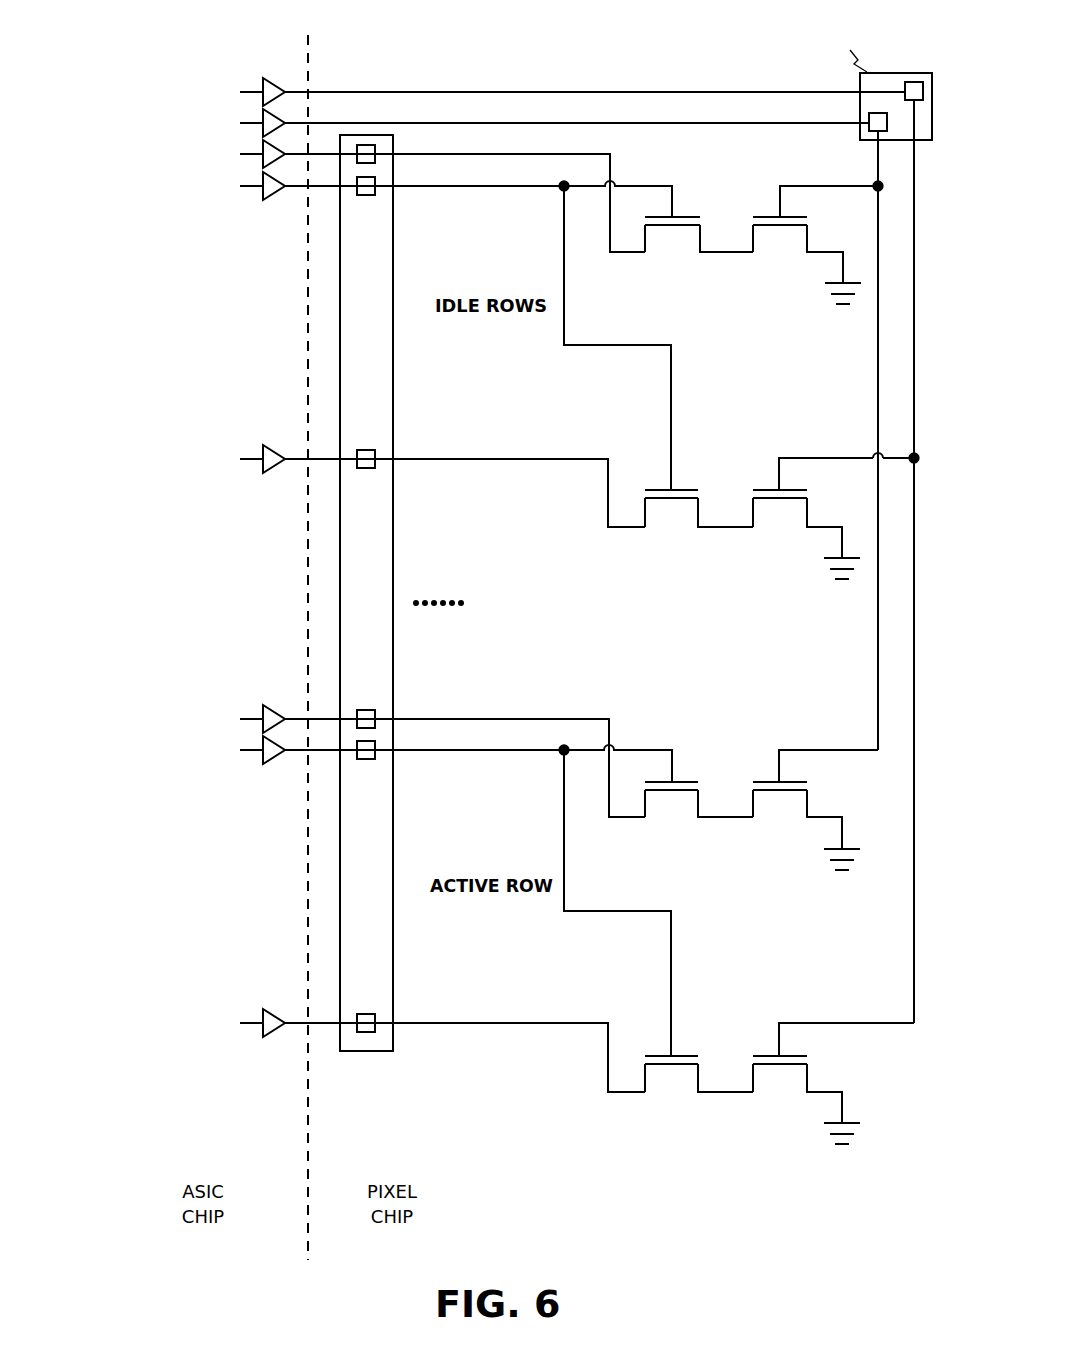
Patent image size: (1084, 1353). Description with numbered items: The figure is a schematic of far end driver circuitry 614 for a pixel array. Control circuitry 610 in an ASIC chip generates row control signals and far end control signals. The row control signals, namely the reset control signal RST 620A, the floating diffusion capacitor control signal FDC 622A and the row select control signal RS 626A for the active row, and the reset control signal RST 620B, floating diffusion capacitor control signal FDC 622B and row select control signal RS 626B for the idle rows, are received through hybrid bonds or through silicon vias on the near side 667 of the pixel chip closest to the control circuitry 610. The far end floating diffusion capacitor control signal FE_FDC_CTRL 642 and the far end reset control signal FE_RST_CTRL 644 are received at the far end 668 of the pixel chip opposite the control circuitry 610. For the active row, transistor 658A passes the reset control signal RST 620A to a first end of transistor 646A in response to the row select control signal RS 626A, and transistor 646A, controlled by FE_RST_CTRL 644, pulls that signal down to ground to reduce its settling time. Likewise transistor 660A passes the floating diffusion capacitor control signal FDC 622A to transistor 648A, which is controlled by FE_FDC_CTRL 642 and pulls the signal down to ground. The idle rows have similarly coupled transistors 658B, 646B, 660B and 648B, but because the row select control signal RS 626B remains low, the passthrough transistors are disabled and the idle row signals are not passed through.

The control circuitry 610 is at (188, 1135).
The far end driver circuitry 614 is at (863, 70).
The far end 668 is at (860, 84).
The far end floating diffusion capacitor control signal FE_FDC_CTRL 642 is at (93, 94).
The far end reset control signal FE_RST_CTRL 644 is at (93, 126).
The reset control signal RST 620B is at (189, 158).
The row select control signal RS 626B is at (189, 190).
The floating diffusion capacitor control signal FDC 622B is at (191, 463).
The reset control signal RST 620A is at (192, 715).
The row select control signal RS 626A is at (192, 749).
The floating diffusion capacitor control signal FDC 622A is at (192, 1021).
The near side 667 is at (394, 1042).
The transistor 658B is at (672, 232).
The transistor 646B is at (780, 232).
The transistor 660B is at (672, 505).
The transistor 648B is at (780, 505).
The transistor 658A is at (672, 797).
The transistor 646A is at (780, 797).
The transistor 660A is at (672, 1071).
The transistor 648A is at (780, 1071).